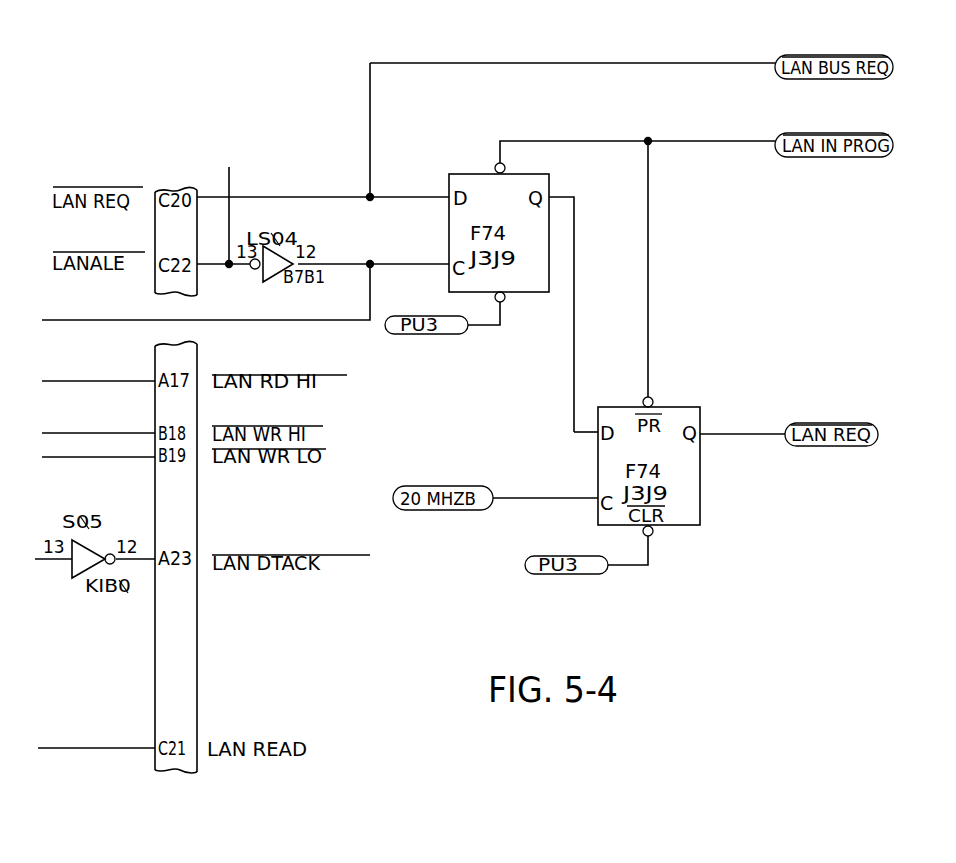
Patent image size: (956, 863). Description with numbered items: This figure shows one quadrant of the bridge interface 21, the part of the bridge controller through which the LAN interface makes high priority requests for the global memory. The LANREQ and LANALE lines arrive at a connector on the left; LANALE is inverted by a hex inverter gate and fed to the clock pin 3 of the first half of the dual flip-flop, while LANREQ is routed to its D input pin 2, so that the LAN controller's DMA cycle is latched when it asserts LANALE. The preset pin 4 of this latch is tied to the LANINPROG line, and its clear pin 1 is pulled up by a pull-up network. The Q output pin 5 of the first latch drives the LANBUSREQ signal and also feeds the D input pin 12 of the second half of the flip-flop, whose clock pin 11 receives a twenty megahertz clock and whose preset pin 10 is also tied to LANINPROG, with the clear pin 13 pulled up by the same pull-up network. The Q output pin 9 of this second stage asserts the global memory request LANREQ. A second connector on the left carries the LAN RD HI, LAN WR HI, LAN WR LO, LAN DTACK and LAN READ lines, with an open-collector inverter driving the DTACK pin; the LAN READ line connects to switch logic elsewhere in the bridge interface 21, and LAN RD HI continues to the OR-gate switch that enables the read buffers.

The bridge interface 21 is at (531, 38).
The flip-flop clear pin 1 is at (493, 308).
The flip-flop D input pin 2 is at (323, 186).
The flip-flop clock pin 3 is at (373, 254).
The flip-flop preset pin 4 is at (635, 157).
The flip-flop Q output pin 5 is at (561, 303).
The flip-flop Q output pin 9 is at (742, 421).
The flip-flop preset pin 10 is at (637, 274).
The flip-flop clock pin 11 is at (545, 486).
The flip-flop D input pin 12 is at (585, 420).
The flip-flop clear pin 13 is at (643, 545).